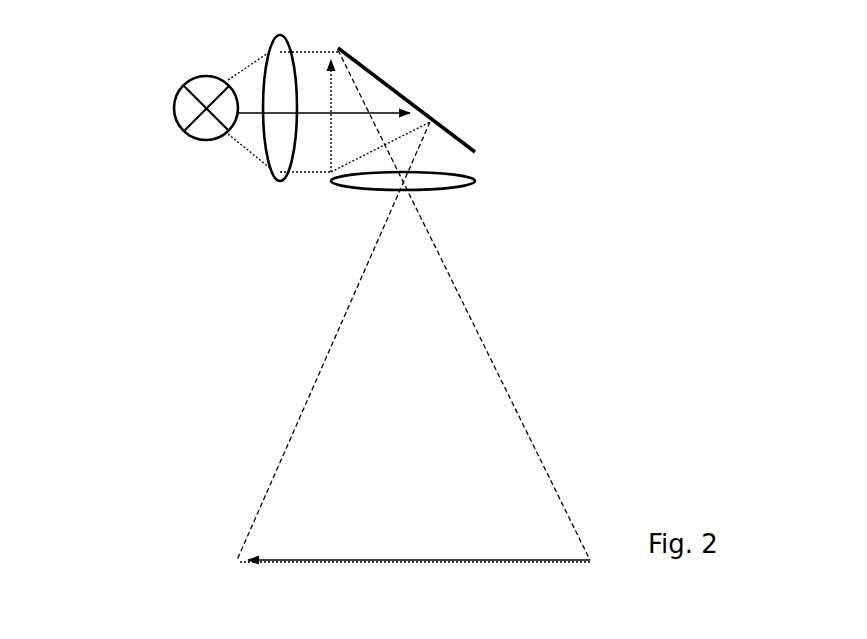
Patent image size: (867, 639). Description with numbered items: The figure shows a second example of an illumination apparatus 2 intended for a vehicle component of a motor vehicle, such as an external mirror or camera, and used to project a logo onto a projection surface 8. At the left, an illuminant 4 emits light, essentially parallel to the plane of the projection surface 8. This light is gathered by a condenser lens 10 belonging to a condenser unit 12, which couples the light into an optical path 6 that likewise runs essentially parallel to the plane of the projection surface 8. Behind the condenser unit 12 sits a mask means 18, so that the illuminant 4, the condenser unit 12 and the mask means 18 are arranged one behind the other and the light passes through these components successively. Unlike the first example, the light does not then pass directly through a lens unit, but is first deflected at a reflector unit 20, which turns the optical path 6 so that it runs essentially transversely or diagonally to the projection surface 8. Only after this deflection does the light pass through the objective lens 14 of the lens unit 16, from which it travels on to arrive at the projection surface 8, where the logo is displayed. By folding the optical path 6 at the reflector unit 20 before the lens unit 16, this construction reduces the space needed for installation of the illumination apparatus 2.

The illumination apparatus 2 is at (160, 77).
The illuminant 4 is at (173, 112).
The optical path 6 is at (252, 112).
The projection surface 8 is at (460, 558).
The condenser lens 10 is at (285, 42).
The condenser unit 12 is at (267, 184).
The objective lens 14 is at (475, 180).
The lens unit 16 is at (478, 201).
The mask means 18 is at (328, 133).
The reflector unit 20 is at (400, 90).